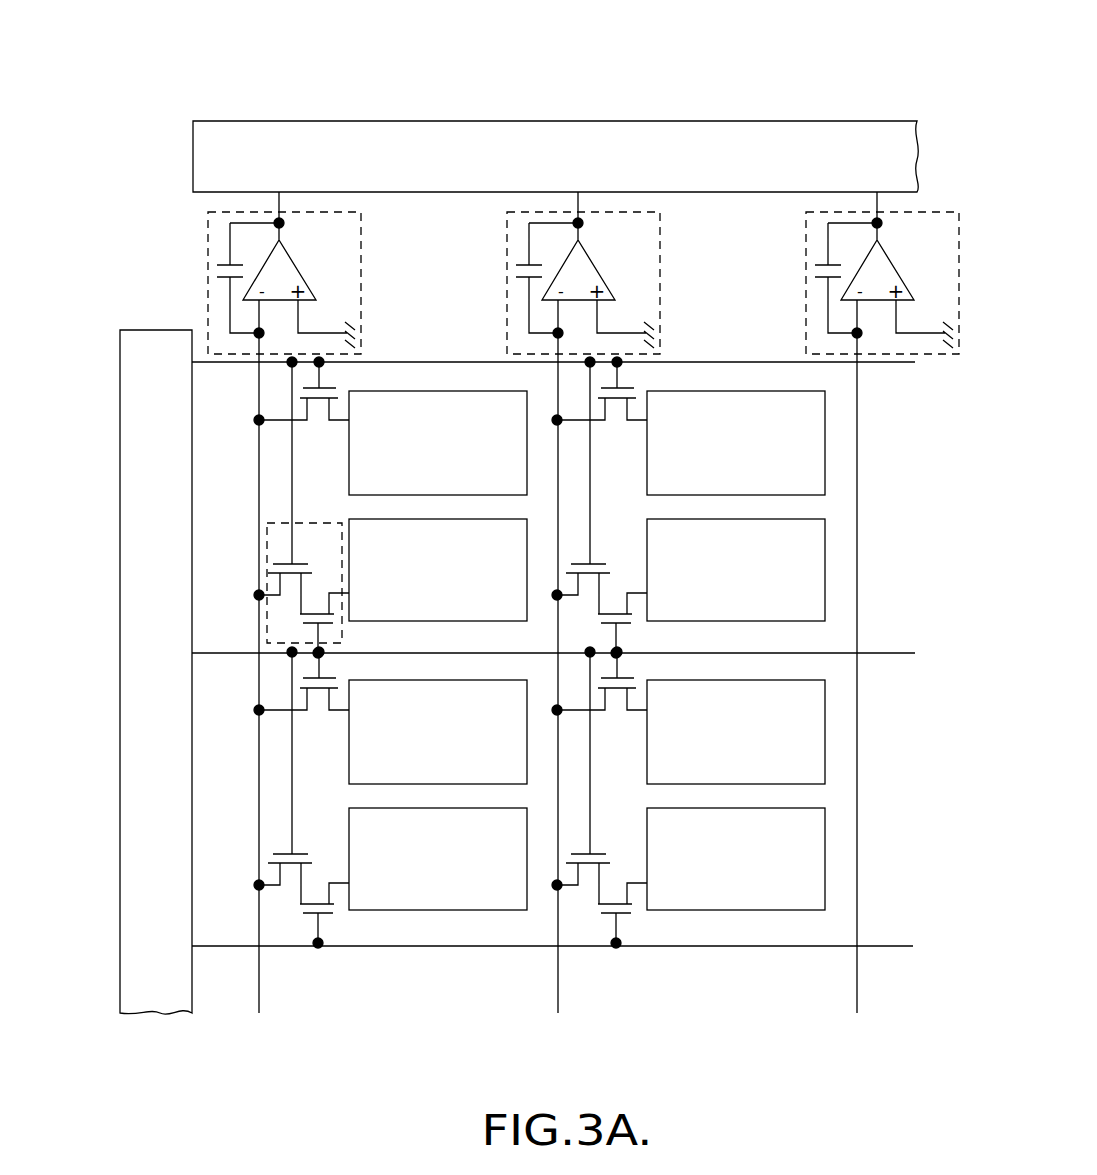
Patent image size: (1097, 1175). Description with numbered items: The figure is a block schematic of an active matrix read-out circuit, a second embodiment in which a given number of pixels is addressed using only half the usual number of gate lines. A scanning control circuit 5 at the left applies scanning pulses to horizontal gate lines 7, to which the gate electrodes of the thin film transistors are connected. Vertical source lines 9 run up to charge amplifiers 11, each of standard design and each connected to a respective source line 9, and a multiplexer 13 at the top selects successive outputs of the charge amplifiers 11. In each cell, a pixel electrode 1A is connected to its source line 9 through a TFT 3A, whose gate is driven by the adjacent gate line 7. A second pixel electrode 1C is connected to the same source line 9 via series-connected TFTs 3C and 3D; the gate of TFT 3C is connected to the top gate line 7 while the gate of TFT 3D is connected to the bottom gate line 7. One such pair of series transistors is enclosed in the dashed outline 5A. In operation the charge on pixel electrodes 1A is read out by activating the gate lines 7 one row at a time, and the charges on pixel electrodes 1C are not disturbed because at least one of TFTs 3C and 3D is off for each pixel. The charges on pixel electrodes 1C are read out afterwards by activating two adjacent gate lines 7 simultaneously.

The multiplexer 13 is at (756, 135).
The charge amplifier 11 is at (208, 270).
The scanning control circuit 5 is at (127, 428).
The portion shown in dashed outline 5A is at (268, 523).
The gate line 7 is at (880, 365).
The source line 9 is at (260, 998).
The thin film transistor 3A is at (300, 386).
The thin film transistor 3C is at (307, 556).
The thin film transistor 3D is at (300, 625).
The pixel electrode 1A is at (587, 587).
The second pixel electrode 1C is at (587, 714).